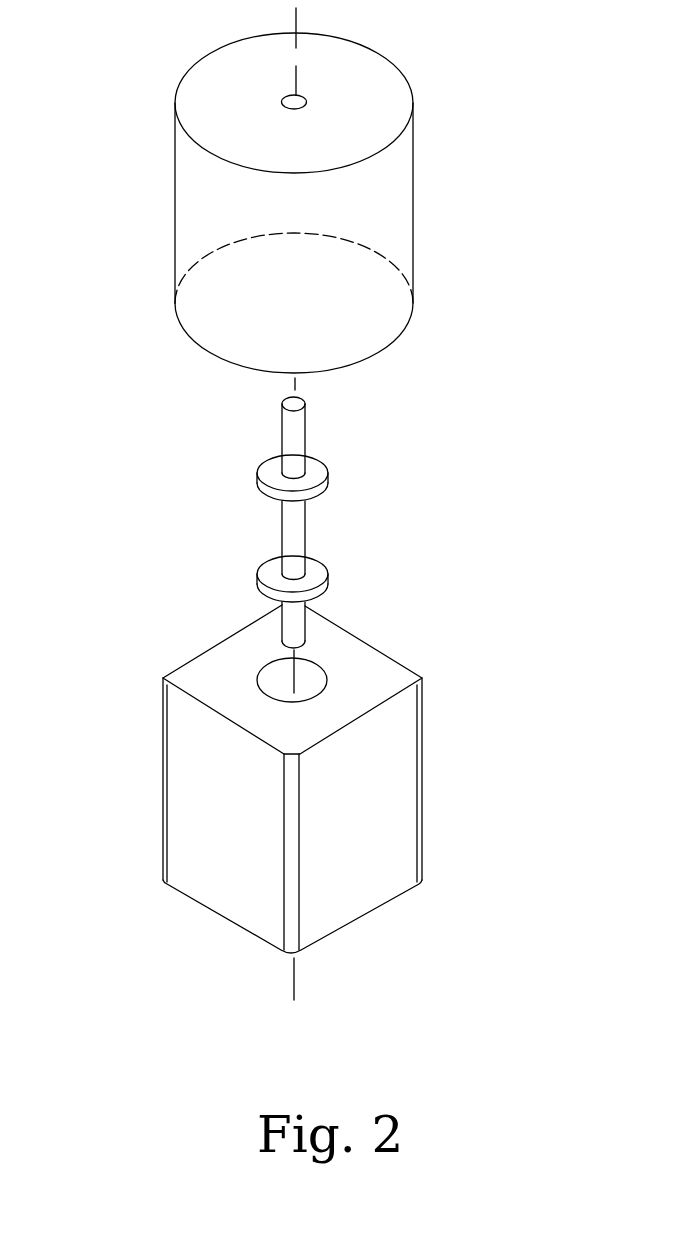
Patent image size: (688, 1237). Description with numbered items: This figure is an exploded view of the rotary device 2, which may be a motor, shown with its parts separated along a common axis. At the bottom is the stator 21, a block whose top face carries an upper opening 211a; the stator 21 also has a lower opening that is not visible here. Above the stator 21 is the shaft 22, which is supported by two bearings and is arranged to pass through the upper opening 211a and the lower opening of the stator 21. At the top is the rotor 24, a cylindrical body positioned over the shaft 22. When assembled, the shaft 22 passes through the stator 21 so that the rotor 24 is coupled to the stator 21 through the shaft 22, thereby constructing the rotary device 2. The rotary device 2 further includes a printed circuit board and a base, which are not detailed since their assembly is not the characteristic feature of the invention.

The rotary device 2 is at (140, 493).
The stator 21 is at (282, 779).
The upper opening 211a is at (280, 677).
The shaft 22 is at (292, 523).
The rotor 24 is at (387, 210).